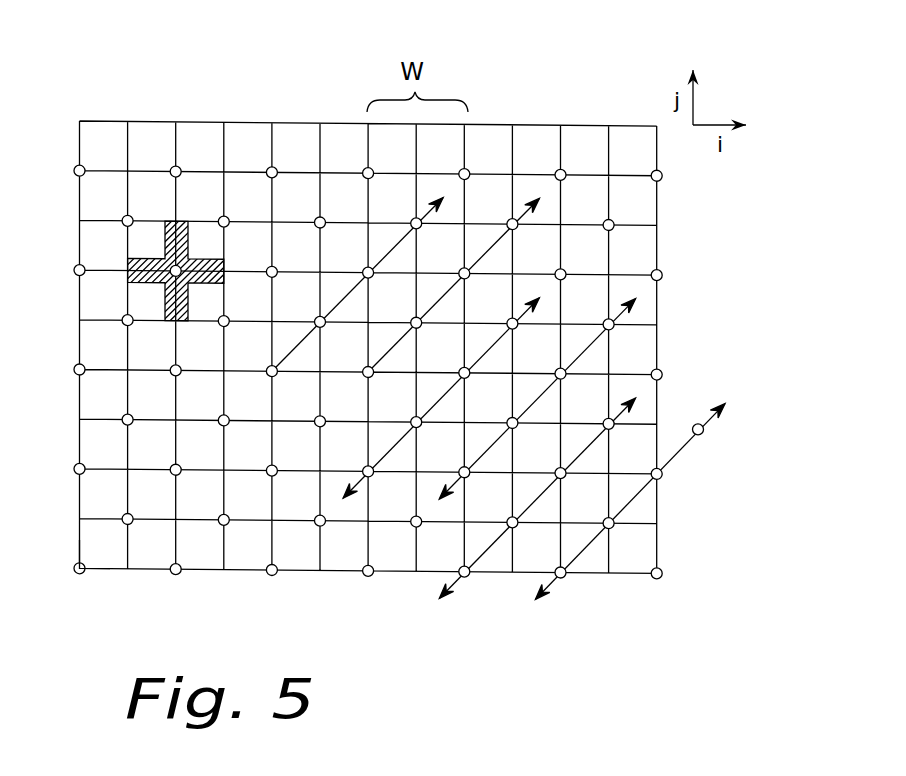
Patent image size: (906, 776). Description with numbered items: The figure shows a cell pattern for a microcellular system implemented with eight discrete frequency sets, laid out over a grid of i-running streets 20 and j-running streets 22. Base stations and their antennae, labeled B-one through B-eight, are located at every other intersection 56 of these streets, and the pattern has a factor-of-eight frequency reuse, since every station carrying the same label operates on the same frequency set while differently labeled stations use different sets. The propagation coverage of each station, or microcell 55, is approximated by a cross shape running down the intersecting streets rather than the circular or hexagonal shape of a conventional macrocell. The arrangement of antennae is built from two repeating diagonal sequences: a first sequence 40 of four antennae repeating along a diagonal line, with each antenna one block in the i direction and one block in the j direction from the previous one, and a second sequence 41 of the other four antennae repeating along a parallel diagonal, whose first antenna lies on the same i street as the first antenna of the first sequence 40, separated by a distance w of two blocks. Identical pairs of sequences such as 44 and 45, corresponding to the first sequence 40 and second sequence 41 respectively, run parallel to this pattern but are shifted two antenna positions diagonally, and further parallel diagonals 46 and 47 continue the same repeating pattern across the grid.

The i-running streets 20 is at (619, 188).
The j-running streets 22 is at (608, 586).
The first sequence 40 is at (337, 508).
The second sequence 41 is at (434, 512).
The identical sequence 44 is at (432, 199).
The identical sequence 45 is at (526, 199).
The diagonal scan line 46 is at (638, 406).
The diagonal scan line 47 is at (728, 395).
The microcells 55 is at (180, 212).
The intersection 56 is at (88, 585).